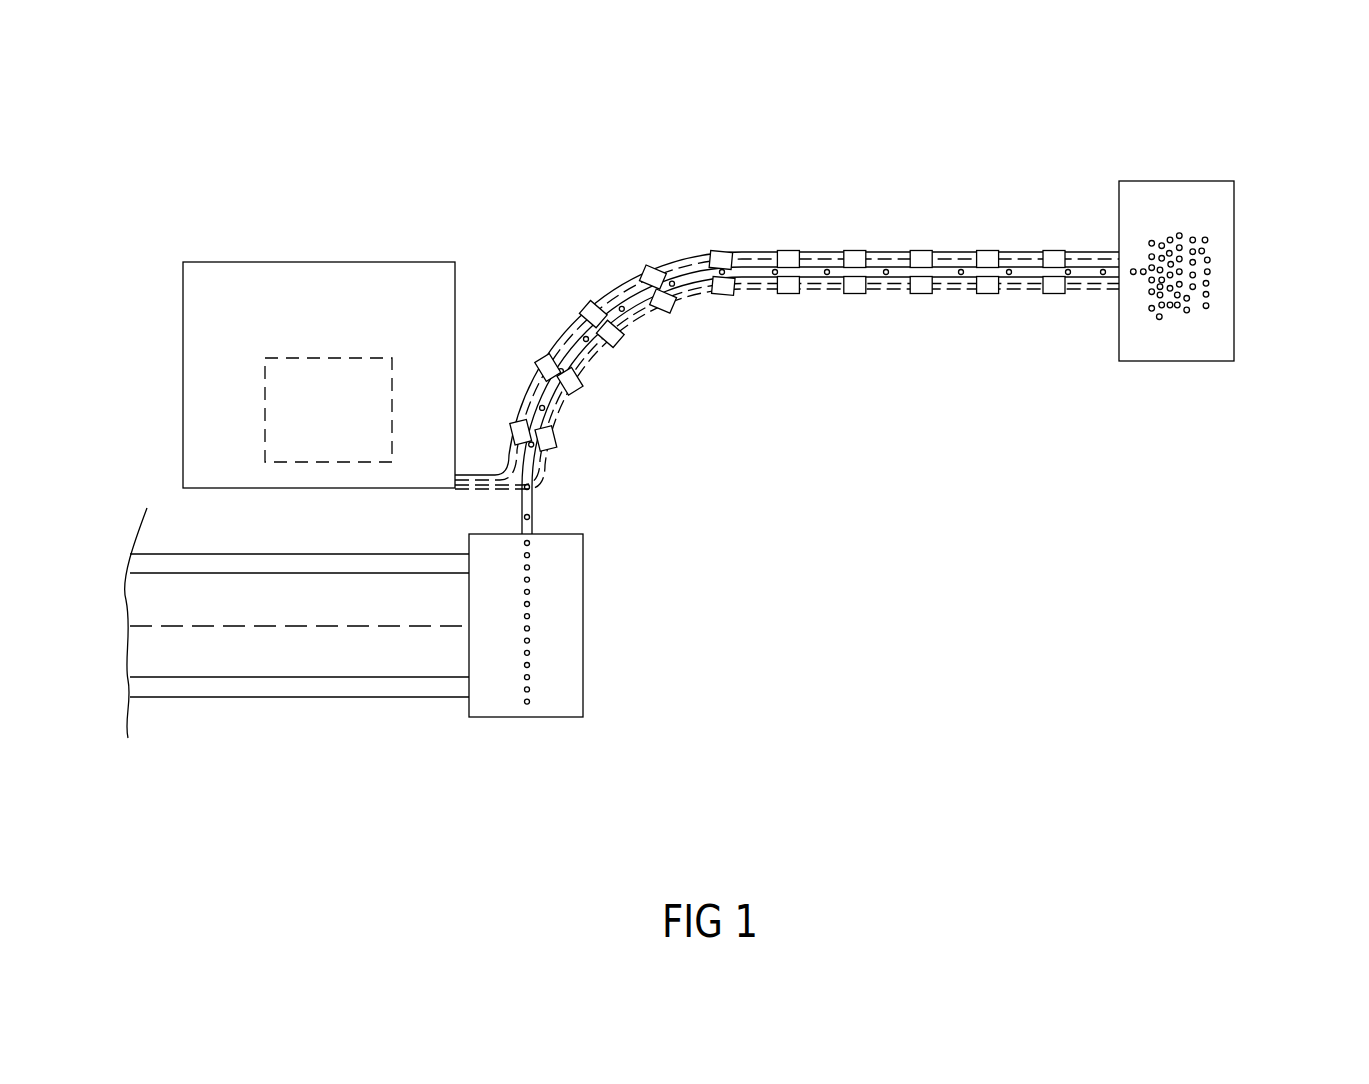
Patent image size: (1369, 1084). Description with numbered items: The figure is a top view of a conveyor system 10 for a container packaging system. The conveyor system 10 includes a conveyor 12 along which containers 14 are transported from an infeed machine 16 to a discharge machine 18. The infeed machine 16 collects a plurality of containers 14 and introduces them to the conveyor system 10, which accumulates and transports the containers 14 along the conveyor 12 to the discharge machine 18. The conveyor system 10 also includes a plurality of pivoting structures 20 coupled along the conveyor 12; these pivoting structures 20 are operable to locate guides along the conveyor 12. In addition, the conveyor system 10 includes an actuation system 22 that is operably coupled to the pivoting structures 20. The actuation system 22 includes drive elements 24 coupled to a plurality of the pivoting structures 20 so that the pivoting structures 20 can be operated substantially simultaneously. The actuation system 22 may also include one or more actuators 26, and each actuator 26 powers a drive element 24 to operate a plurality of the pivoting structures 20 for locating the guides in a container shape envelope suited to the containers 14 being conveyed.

The conveyor system 10 is at (366, 92).
The conveyor 12 is at (948, 272).
The containers 14 is at (1218, 211).
The infeed machine 16 is at (1187, 192).
The discharge machine 18 is at (562, 628).
The pivoting structures 20 is at (1050, 283).
The actuation system 22 is at (213, 270).
The drive elements 24 is at (823, 253).
The actuators 26 is at (270, 392).